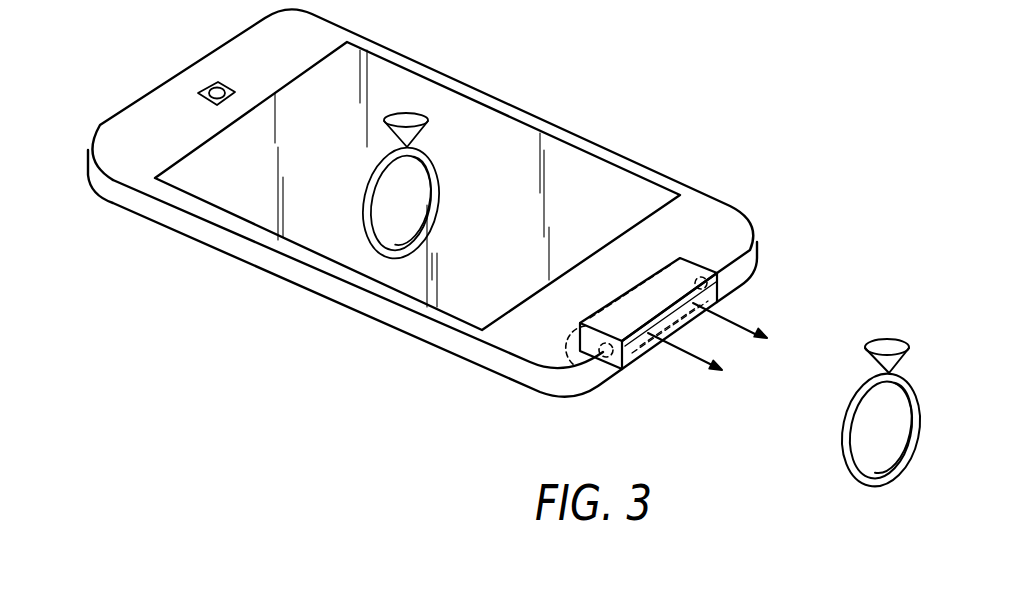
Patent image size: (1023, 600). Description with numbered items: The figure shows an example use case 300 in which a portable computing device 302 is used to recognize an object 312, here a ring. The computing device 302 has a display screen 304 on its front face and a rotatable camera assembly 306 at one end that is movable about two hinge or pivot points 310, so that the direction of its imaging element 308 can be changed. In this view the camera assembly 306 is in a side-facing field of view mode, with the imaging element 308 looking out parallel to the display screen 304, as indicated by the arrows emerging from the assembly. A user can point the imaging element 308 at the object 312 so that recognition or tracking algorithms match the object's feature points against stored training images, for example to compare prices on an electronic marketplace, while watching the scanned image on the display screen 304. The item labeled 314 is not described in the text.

The use case 300 is at (509, 240).
The portable computing device 302 is at (308, 272).
The display screen 304 is at (392, 90).
The rotatable camera assembly 306 is at (671, 394).
The imaging element 308 is at (720, 304).
The pivot points 310 is at (697, 276).
The object 312 is at (922, 408).
The display 314 is at (600, 98).